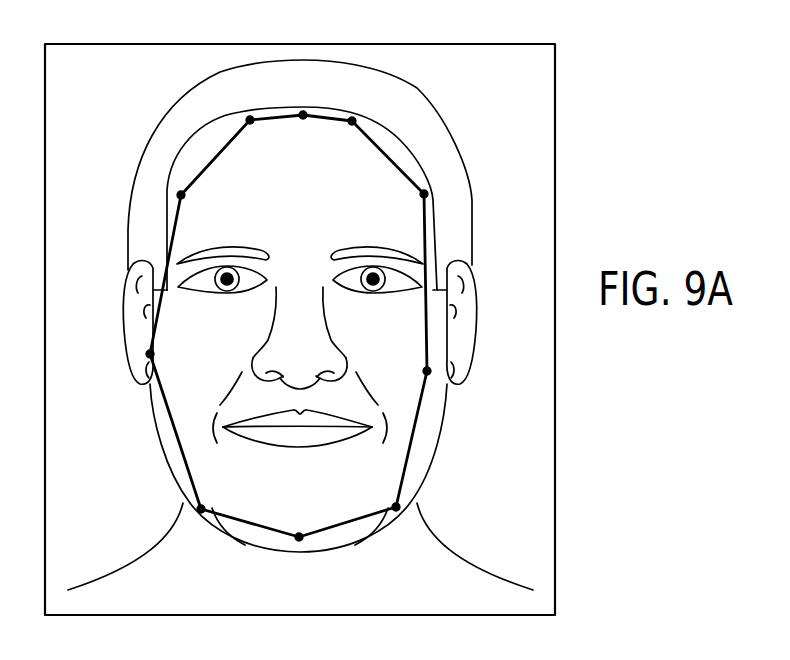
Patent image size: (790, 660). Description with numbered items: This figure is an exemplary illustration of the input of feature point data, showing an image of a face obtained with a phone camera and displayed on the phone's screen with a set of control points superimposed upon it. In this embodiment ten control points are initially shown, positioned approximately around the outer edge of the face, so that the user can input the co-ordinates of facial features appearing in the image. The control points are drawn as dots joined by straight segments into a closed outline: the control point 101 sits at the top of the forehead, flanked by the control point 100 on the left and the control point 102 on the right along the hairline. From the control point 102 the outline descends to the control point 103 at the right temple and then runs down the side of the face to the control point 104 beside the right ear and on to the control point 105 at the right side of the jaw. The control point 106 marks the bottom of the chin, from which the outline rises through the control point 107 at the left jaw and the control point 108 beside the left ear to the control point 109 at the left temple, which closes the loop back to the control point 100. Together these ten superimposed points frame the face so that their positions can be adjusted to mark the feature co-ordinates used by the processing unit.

The control point 100 is at (248, 118).
The control point 101 is at (303, 112).
The control point 102 is at (354, 120).
The control point 103 is at (426, 194).
The control point 104 is at (429, 371).
The control point 105 is at (398, 507).
The control point 106 is at (301, 538).
The control point 107 is at (200, 508).
The control point 108 is at (148, 354).
The control point 109 is at (179, 194).